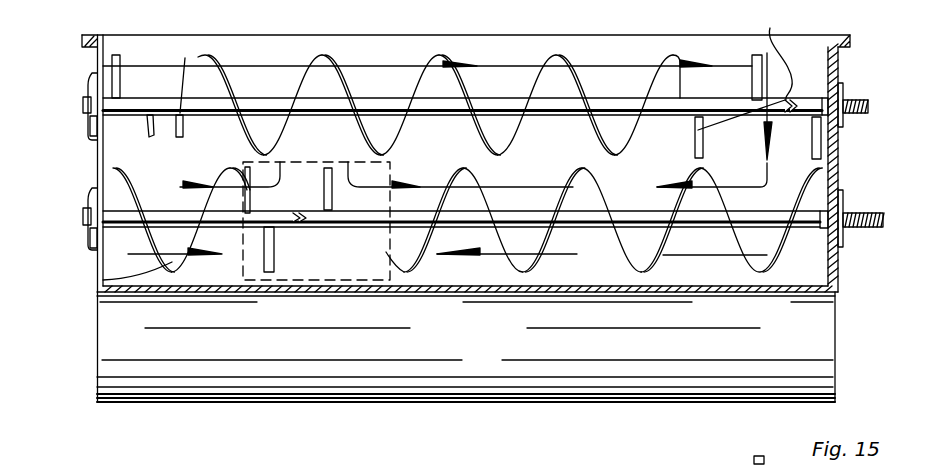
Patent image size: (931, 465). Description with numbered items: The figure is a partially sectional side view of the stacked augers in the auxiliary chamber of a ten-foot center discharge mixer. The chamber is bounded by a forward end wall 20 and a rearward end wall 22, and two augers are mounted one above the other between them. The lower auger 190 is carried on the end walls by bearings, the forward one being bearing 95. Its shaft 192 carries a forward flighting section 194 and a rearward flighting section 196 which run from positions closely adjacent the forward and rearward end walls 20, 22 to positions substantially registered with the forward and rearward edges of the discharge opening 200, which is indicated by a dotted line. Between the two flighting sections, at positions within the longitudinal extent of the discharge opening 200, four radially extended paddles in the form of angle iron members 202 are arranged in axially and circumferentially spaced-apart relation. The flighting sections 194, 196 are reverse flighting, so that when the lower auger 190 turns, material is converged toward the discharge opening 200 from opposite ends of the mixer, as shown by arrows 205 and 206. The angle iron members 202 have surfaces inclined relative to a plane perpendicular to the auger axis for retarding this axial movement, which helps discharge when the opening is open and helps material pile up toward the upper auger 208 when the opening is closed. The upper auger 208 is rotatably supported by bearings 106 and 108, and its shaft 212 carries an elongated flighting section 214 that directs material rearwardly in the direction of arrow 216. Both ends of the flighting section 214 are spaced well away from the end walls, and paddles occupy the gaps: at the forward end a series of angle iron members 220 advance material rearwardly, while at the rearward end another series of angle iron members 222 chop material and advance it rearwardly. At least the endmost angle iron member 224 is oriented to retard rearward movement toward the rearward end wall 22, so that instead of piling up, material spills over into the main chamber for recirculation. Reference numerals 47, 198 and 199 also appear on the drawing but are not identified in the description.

The forward end wall 20 is at (97, 250).
The rearward end wall 22 is at (840, 272).
The lower shaft bearing (right) 47 is at (840, 246).
The bearing 95 is at (90, 204).
The bearing 106 is at (92, 85).
The bearing 108 is at (842, 84).
The lower auger 190 is at (724, 236).
The shaft 192 is at (758, 217).
The forward flighting section 194 is at (117, 172).
The rearward flighting section 196 is at (523, 265).
The transfer zone 198 is at (240, 265).
The flight end 199 is at (420, 274).
The discharge opening 200 is at (323, 282).
The angle iron members 202 is at (275, 250).
The arrow 205 is at (100, 277).
The arrow 206 is at (600, 258).
The upper auger 208 is at (462, 84).
The shaft 212 is at (573, 66).
The elongated flighting section 214 is at (577, 78).
The arrow 216 is at (420, 66).
The angle iron members 220 is at (153, 115).
The angle iron members 222 is at (752, 55).
The endmost angle iron member 224 is at (822, 152).